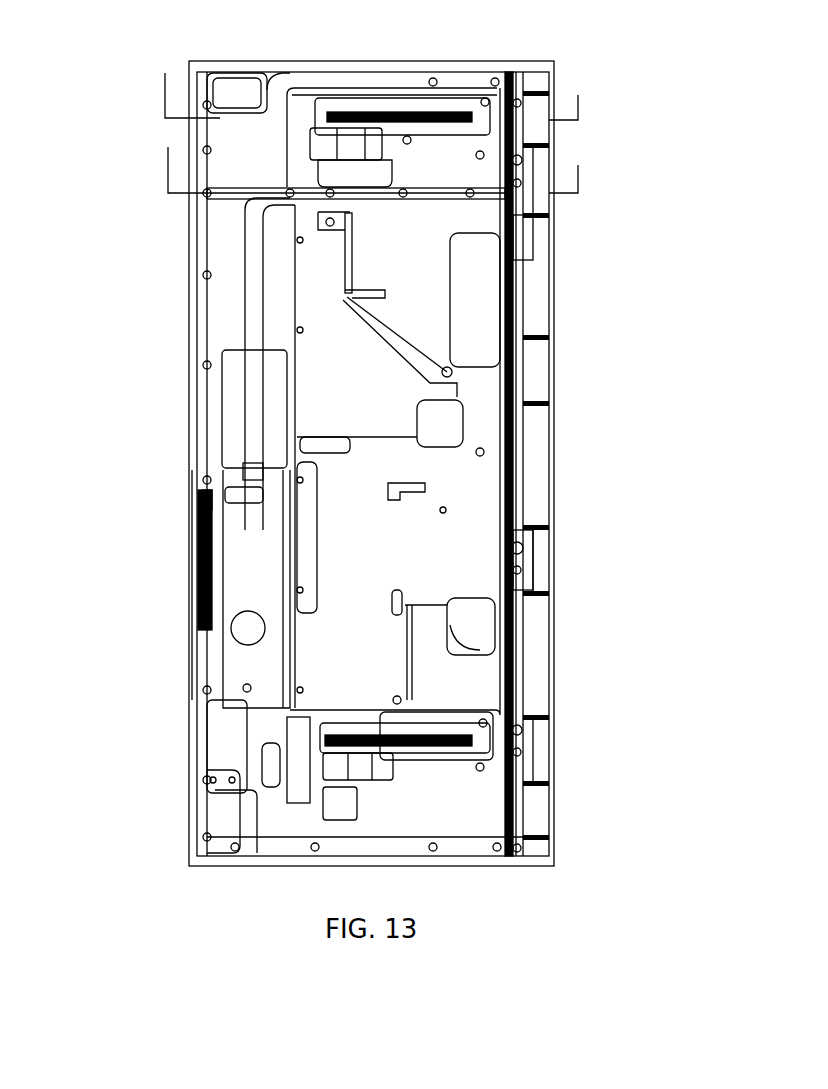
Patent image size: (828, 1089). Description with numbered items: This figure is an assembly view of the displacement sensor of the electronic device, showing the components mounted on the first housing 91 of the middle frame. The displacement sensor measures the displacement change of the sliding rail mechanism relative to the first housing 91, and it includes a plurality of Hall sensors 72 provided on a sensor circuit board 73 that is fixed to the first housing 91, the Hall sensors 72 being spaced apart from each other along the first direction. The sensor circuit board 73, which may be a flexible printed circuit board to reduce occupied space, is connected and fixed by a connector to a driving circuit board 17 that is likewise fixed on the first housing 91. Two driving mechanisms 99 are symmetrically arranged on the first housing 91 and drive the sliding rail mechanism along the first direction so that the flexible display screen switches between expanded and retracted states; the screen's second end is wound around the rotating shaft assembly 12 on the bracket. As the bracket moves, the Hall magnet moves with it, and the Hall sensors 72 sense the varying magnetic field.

The rotating shaft assembly 12 is at (565, 660).
The driving circuit board 17 is at (250, 578).
The Hall sensors 72 is at (438, 193).
The sensor circuit board 73 is at (243, 298).
The first housing 91 is at (463, 563).
The driving mechanism 99 is at (400, 108).